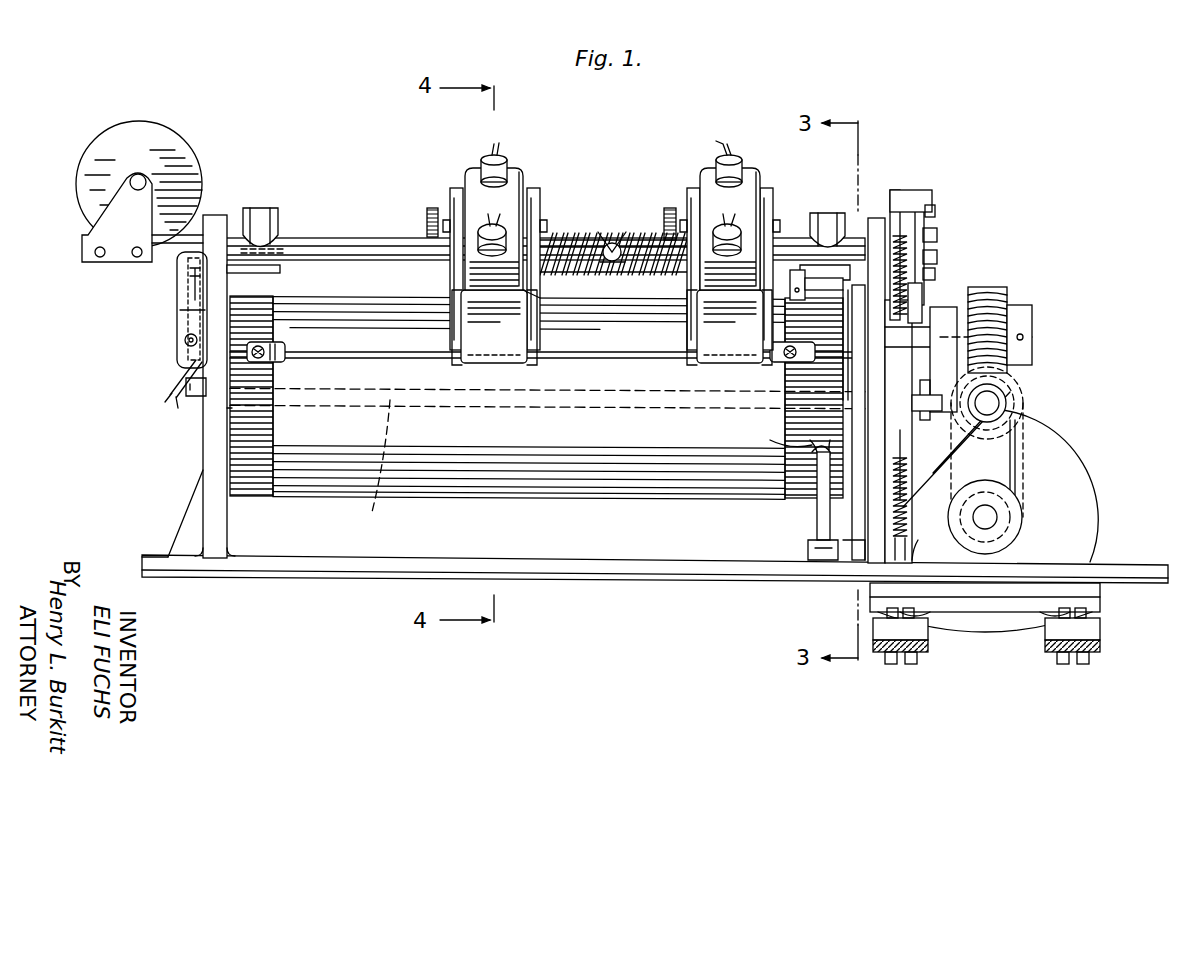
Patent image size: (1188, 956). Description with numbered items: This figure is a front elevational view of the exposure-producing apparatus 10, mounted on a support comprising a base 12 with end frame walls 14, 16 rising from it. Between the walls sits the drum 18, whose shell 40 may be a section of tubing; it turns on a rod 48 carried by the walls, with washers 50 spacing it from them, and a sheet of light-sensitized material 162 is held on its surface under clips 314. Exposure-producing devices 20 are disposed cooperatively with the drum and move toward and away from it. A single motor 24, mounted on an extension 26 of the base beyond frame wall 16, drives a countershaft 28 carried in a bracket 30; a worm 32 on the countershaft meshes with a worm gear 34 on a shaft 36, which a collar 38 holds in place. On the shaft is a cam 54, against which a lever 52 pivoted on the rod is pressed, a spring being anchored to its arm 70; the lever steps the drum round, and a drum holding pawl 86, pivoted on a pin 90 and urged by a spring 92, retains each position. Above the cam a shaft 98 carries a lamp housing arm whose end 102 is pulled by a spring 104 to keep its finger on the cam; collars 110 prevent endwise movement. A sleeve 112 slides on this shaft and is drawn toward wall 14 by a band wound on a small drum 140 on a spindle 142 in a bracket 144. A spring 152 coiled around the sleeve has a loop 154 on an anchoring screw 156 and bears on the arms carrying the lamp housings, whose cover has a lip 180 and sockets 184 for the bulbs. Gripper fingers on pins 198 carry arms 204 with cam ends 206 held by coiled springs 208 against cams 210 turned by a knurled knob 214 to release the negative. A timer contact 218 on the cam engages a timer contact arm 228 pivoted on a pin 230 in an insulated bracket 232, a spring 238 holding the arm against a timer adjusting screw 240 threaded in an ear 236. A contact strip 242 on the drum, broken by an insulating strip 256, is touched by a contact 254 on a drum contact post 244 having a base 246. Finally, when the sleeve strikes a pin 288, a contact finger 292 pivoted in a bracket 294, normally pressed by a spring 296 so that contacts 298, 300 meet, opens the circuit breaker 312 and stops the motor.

The apparatus 10 is at (190, 468).
The base 12 is at (340, 572).
The end frame wall 14 is at (222, 470).
The end frame wall 16 is at (872, 545).
The drum 18 is at (655, 505).
The exposure-producing device 20 is at (532, 180).
The motor 24 is at (1103, 490).
The extension 26 is at (1138, 574).
The countershaft 28 is at (998, 400).
The bracket 30 is at (935, 478).
The worm 32 is at (1023, 413).
The worm gear 34 is at (992, 290).
The shaft 36 is at (1032, 340).
The collar 38 is at (1022, 318).
The shell 40 is at (268, 485).
The rod 48 is at (380, 508).
The washers 50 is at (230, 408).
The lever 52 is at (900, 430).
The cam 54 is at (905, 340).
The arm 70 is at (903, 505).
The drum holding pawl 86 is at (847, 293).
The pin 90 is at (848, 300).
The spring 92 is at (848, 562).
The shaft 98 is at (355, 237).
The end 102 is at (918, 312).
The spring 104 is at (960, 305).
The collars 110 is at (247, 212).
The sleeve 112 is at (640, 262).
The drum 140 is at (118, 133).
The spindle 142 is at (128, 183).
The bracket 144 is at (105, 214).
The spring 152 is at (640, 238).
The loop 154 is at (620, 270).
The anchoring screw 156 is at (614, 243).
The light-sensitized material 162 is at (560, 500).
The lip 180 is at (528, 300).
The sockets 184 is at (502, 156).
The pin 198 is at (455, 350).
The arms 204 is at (458, 310).
The cam ends 206 is at (460, 205).
The coiled springs 208 is at (450, 270).
The cams 210 is at (455, 200).
The knurled knob 214 is at (427, 225).
The timer contact 218 is at (945, 305).
The timer contact arm 228 is at (897, 235).
The pin 230 is at (940, 255).
The bracket 232 is at (918, 198).
The ear 236 is at (933, 205).
The spring 238 is at (940, 232).
The timer adjusting screw 240 is at (938, 212).
The contact strip 242 is at (822, 365).
The drum contact post 244 is at (812, 516).
The base 246 is at (812, 562).
The contact 254 is at (772, 443).
The insulating strip 256 is at (822, 445).
The pin 288 is at (276, 265).
The contact finger 292 is at (186, 336).
The bracket 294 is at (190, 352).
The spring 296 is at (190, 385).
The contact 298 is at (188, 298).
The contact 300 is at (192, 270).
The circuit breaker 312 is at (172, 304).
The clips 314 is at (260, 362).